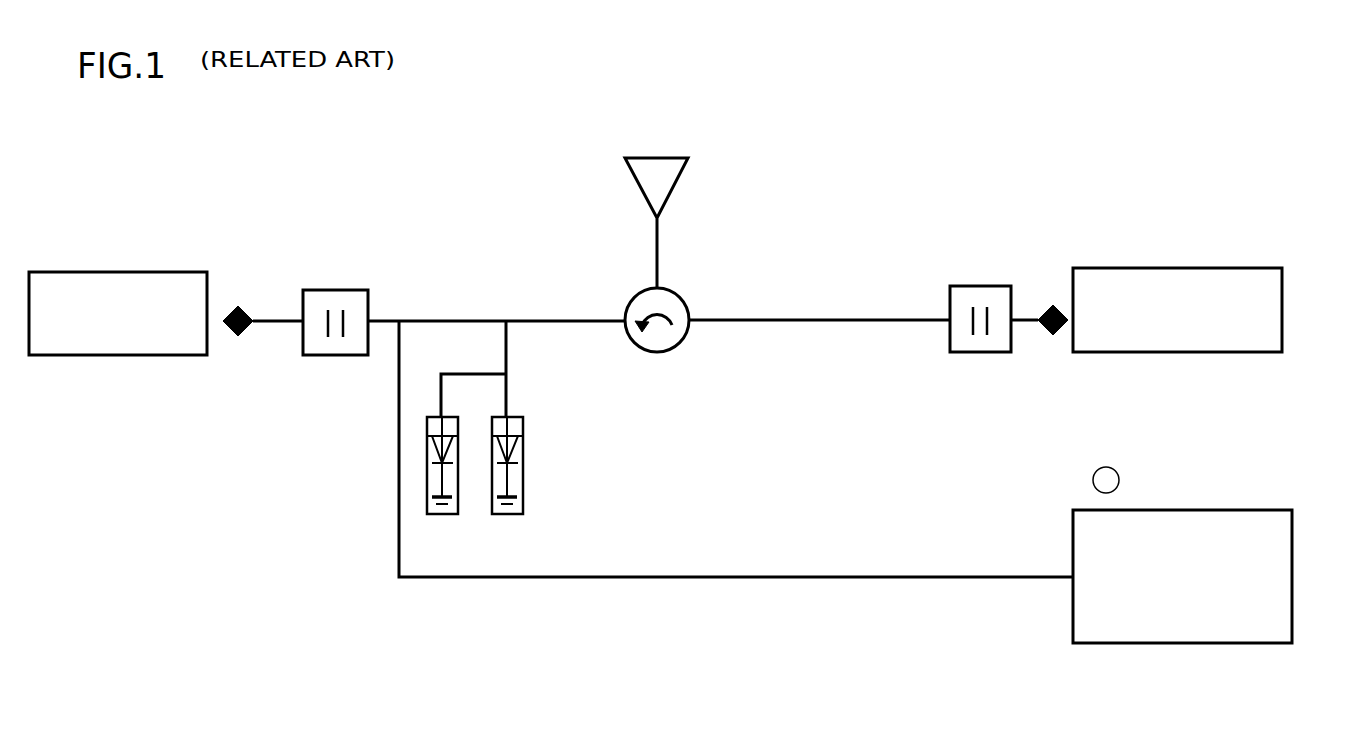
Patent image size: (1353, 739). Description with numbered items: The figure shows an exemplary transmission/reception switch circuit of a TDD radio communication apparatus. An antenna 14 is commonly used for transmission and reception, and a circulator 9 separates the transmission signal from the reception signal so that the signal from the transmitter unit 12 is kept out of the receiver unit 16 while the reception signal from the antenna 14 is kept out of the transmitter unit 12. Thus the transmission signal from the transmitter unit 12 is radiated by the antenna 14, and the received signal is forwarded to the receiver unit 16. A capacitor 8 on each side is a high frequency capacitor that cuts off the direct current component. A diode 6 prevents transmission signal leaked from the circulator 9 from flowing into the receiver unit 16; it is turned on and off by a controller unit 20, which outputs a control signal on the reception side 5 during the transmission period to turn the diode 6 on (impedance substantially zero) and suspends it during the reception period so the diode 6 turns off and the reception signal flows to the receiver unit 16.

The receiver unit 16 is at (118, 313).
The capacitor 8 is at (343, 290).
The antenna 14 is at (645, 157).
The circulator 9 is at (680, 293).
The diode 6 is at (440, 515).
The transmitter unit 12 is at (1177, 310).
The controller unit 20 is at (1067, 576).
The control signal on the reception side 5 is at (1106, 480).